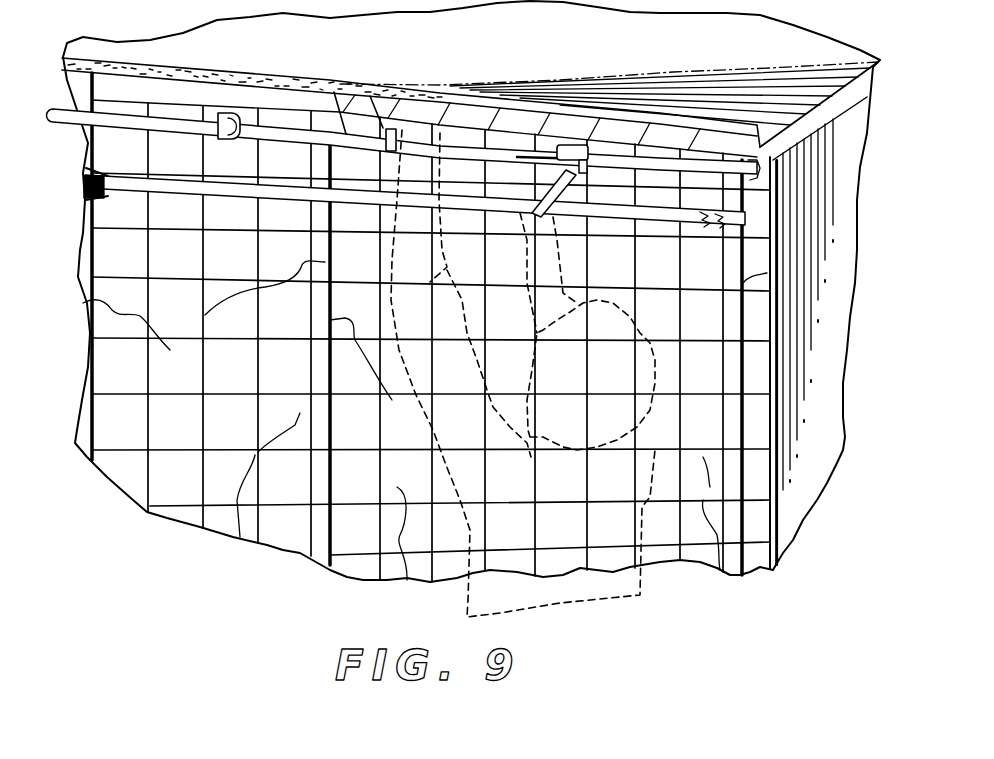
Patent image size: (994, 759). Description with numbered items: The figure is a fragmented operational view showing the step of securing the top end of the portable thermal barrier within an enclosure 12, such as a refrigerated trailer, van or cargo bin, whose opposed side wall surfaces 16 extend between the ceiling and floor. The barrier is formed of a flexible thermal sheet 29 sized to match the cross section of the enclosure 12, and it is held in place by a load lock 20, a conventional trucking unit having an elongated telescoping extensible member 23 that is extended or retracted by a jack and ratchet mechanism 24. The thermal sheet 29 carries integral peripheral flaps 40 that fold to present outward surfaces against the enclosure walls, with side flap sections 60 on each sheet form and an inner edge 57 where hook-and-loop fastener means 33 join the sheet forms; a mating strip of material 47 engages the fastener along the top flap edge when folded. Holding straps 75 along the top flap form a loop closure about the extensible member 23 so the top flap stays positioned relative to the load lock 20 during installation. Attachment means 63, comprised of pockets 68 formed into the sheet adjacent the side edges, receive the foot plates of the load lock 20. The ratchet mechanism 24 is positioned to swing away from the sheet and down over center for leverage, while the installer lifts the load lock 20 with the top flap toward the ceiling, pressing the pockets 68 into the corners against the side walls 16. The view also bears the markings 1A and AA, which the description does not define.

The enclosure 12 is at (800, 532).
The side wall surfaces 16 is at (818, 447).
The load lock 20 is at (372, 118).
The extensible member 23 is at (320, 140).
The jack and ratchet mechanism 24 is at (577, 176).
The thermal sheet 29 is at (287, 70).
The fastener means 33 is at (90, 160).
The peripheral flaps 40 is at (546, 100).
The mating strip of material 47 is at (240, 200).
The inner edge 57 is at (330, 470).
The side flap sections 60 is at (770, 307).
The attachment means 63 is at (795, 128).
The pockets 68 is at (772, 187).
The holding straps 75 is at (222, 125).
The hidden object 1A is at (463, 55).
The section line AA is at (345, 92).